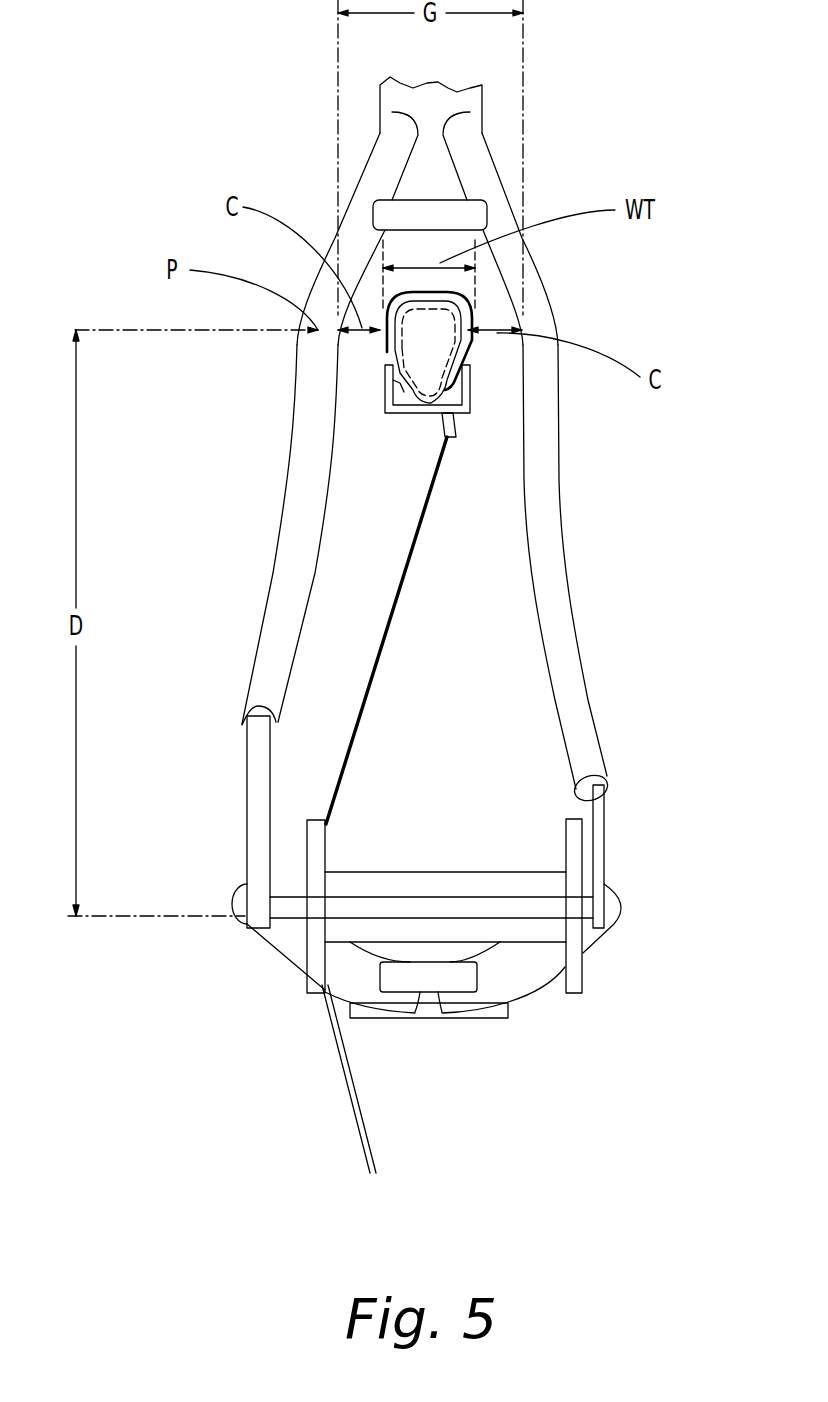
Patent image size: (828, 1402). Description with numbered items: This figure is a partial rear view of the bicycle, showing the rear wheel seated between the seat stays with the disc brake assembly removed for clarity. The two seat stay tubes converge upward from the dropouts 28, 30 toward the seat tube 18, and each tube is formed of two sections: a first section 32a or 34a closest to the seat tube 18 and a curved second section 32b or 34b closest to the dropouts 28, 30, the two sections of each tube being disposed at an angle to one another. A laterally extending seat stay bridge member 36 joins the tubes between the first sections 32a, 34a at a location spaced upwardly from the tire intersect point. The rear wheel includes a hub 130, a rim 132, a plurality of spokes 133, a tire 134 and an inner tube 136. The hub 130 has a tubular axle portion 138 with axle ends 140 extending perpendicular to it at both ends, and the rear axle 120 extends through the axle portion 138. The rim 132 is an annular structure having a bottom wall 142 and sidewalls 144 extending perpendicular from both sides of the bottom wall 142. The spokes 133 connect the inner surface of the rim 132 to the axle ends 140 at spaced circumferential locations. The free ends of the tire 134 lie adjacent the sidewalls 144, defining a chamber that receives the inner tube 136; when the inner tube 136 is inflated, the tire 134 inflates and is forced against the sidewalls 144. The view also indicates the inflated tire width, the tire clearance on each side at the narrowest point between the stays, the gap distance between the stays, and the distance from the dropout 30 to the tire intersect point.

The seat tube 18 is at (482, 100).
The seat stay bridge member 36 is at (455, 197).
The first section of seat stay tube 34a is at (351, 203).
The second section of seat stay tube 34b is at (272, 584).
The first section of seat stay tube 32a is at (545, 285).
The second section of seat stay tube 32b is at (577, 607).
The tire 134 is at (472, 308).
The inner tube 136 is at (415, 383).
The rim 132 is at (478, 390).
The sidewalls 144 is at (393, 388).
The bottom wall 142 is at (410, 415).
The spokes 133 is at (392, 620).
The dropout 30 is at (250, 796).
The dropout 28 is at (604, 828).
The axle ends 140 is at (313, 866).
The tubular axle portion 138 is at (517, 870).
The rear axle 120 is at (533, 905).
The hub 130 is at (441, 840).